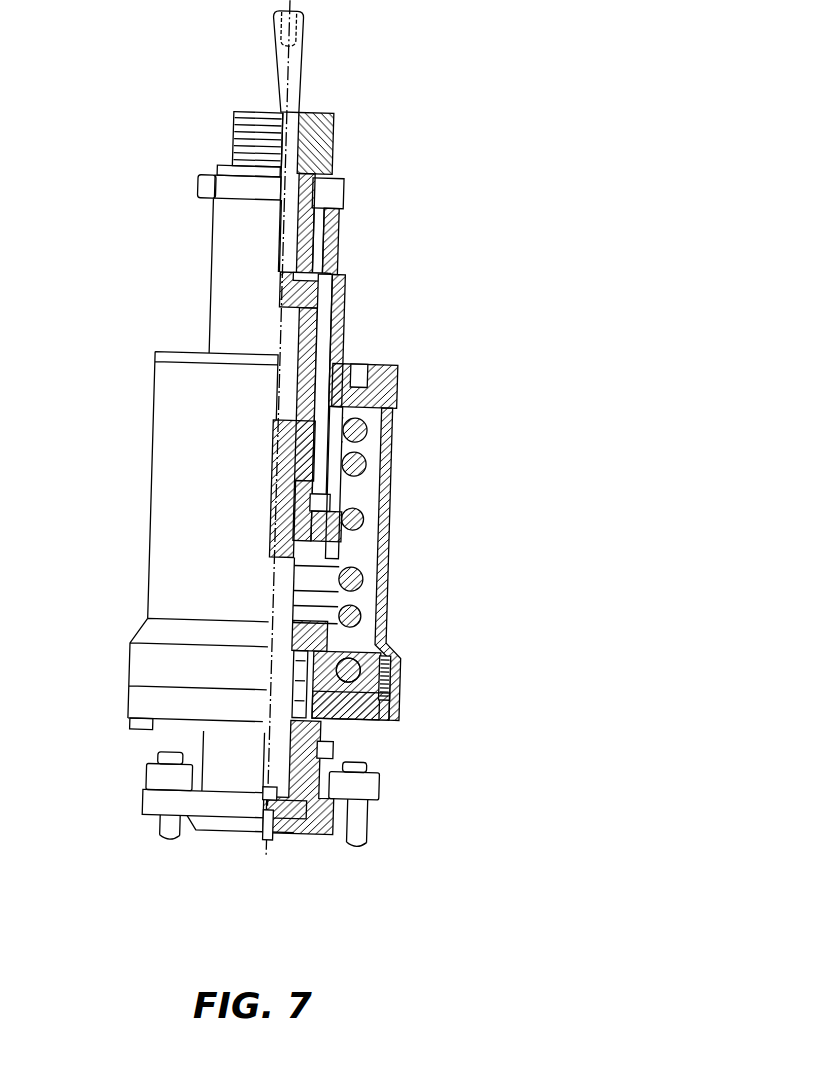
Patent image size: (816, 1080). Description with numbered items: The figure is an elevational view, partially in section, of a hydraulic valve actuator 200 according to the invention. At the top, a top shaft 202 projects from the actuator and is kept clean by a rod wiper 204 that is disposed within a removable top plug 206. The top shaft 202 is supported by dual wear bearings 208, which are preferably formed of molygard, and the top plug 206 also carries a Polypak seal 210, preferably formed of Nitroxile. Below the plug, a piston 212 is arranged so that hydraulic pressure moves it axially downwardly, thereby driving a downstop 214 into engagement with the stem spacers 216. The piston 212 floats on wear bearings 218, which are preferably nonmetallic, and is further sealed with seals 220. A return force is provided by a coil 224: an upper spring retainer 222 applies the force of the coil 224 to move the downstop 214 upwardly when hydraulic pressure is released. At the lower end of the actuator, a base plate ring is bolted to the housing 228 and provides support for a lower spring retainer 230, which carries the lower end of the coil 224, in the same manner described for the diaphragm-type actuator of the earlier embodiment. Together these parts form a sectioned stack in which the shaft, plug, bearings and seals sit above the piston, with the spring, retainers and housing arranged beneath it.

The hydraulic valve actuator 200 is at (150, 136).
The top shaft 202 is at (302, 84).
The rod wiper 204 is at (330, 112).
The top plug 206 is at (330, 137).
The dual wear bearings 208 is at (303, 243).
The Polypak seal 210 is at (297, 272).
The piston 212 is at (297, 320).
The downstop 214 is at (305, 535).
The stem spacers 216 is at (293, 613).
The wear bearings 218 is at (337, 322).
The seals 220 is at (337, 272).
The upper spring retainer 222 is at (295, 541).
The coil 224 is at (360, 617).
The housing 228 is at (402, 677).
The lower spring retainer 230 is at (387, 695).